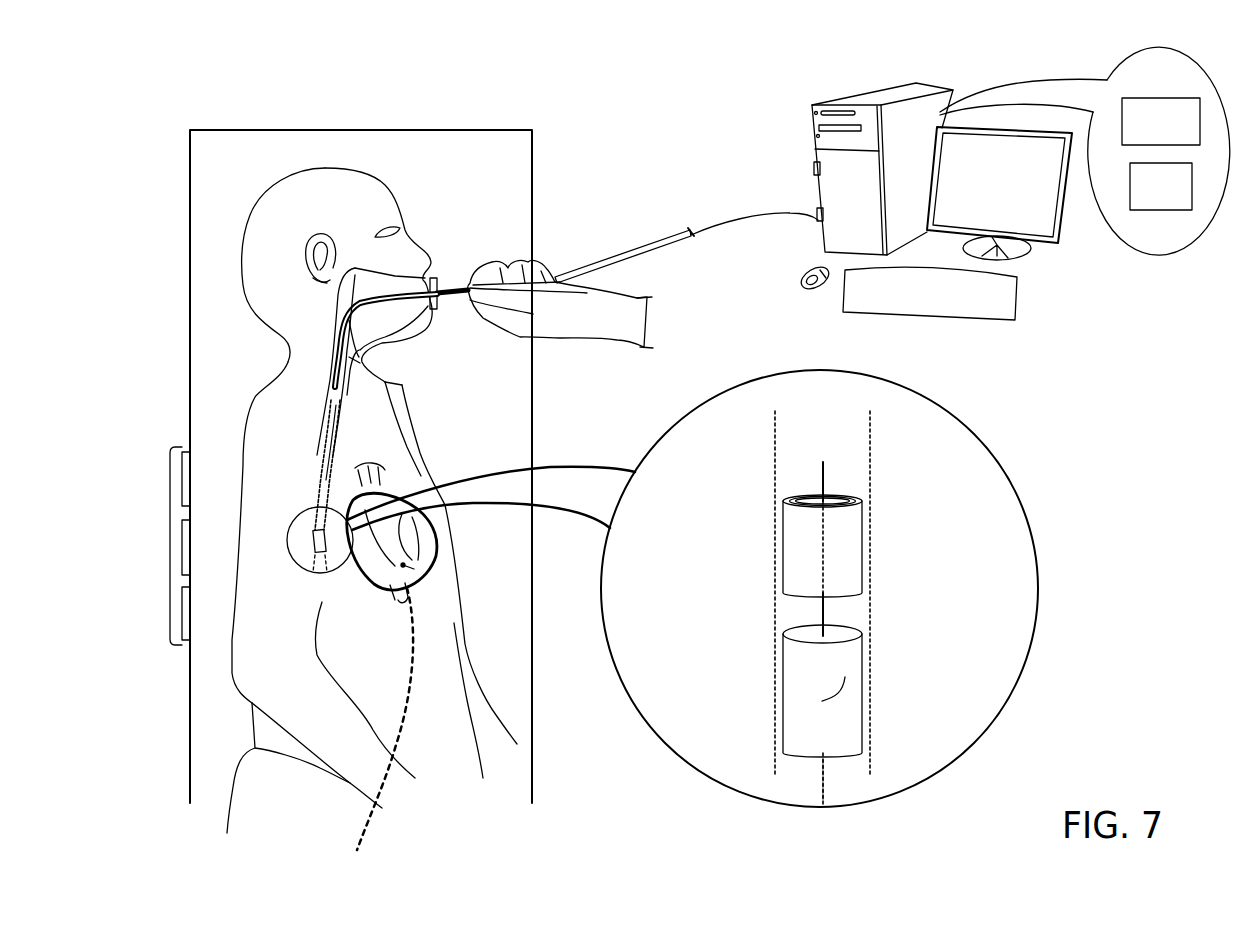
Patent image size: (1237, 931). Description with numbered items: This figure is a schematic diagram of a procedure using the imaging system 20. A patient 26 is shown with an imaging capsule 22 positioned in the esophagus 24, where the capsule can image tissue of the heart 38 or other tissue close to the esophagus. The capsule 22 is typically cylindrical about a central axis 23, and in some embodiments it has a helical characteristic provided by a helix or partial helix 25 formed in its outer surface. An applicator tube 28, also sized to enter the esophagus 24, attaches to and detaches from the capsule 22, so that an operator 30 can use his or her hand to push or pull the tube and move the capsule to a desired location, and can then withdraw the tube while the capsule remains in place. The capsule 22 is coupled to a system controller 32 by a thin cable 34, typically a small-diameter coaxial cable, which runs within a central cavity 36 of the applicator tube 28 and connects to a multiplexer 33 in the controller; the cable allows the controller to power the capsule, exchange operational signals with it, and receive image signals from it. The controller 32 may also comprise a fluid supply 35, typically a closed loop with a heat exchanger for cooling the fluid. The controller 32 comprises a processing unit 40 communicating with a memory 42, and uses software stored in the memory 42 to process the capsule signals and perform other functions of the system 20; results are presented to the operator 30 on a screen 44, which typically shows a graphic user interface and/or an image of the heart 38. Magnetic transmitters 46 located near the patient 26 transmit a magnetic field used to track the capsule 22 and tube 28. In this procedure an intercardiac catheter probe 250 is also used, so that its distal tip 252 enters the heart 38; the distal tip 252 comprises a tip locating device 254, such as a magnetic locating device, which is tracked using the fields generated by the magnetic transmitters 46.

The imaging system 20 is at (165, 188).
The imaging capsule 22 is at (864, 652).
The central axis 23 is at (827, 773).
The esophagus 24 is at (872, 425).
The helix or partial helix 25 is at (847, 689).
The patient 26 is at (383, 182).
The applicator tube 28 is at (607, 260).
The operator 30 is at (570, 340).
The system controller 32 is at (842, 104).
The multiplexer 33 is at (817, 212).
The thin cable 34 is at (707, 232).
The fluid supply 35 is at (813, 169).
The central cavity 36 is at (856, 497).
The heart 38 is at (437, 548).
The processing unit 40 is at (1161, 211).
The memory 42 is at (1161, 97).
The screen 44 is at (1062, 236).
The magnetic transmitters 46 is at (164, 537).
The intercardiac catheter probe 250 is at (400, 735).
The distal tip 252 is at (414, 569).
The tip locating device 254 is at (227, 695).